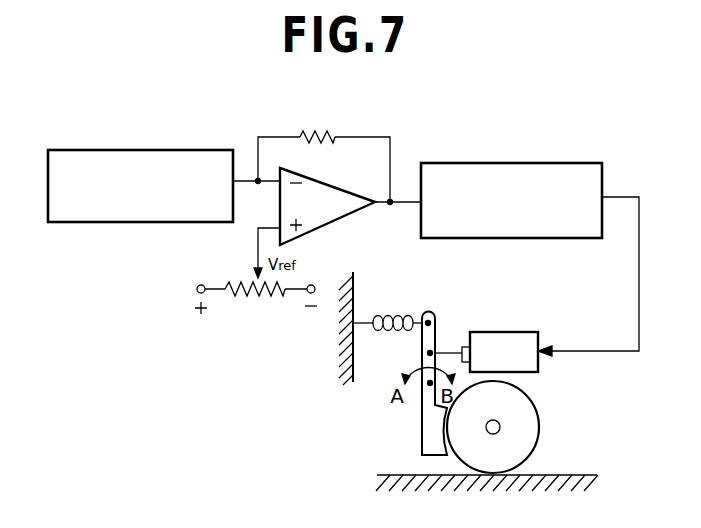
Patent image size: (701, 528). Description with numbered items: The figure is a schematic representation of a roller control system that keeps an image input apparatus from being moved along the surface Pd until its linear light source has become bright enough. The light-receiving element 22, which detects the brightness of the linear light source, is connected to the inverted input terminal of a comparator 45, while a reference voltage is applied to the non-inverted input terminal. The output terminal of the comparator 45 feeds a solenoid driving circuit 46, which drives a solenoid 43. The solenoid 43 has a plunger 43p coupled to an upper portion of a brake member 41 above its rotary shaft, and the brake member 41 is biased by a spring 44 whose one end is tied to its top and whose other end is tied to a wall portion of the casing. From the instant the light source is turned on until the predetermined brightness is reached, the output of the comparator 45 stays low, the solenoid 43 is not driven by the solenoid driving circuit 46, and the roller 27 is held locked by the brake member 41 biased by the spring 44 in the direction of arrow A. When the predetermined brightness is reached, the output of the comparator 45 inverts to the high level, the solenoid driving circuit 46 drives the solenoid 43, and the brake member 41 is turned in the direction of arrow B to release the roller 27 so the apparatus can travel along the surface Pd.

The light-receiving element 22 is at (162, 150).
The comparator 45 is at (325, 188).
The solenoid driving circuit 46 is at (505, 162).
The spring 44 is at (392, 316).
The brake member 41 is at (423, 419).
The solenoid 43 is at (536, 362).
The plunger 43p is at (465, 346).
The roller 27 is at (537, 423).
The surface Pd is at (580, 471).